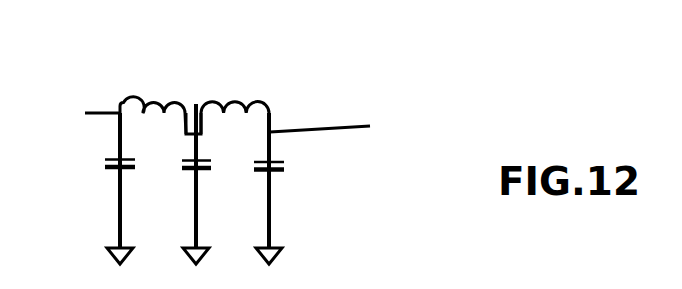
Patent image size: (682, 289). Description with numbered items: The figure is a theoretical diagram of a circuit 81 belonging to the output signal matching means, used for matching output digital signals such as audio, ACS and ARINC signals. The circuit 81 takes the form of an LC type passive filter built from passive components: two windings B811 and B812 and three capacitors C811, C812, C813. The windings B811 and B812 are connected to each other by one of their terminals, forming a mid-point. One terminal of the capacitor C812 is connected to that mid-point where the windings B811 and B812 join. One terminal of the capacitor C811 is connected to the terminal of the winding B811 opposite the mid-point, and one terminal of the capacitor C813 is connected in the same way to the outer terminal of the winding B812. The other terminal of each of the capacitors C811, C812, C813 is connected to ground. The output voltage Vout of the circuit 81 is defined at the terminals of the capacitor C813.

The circuit 81 is at (530, 47).
The winding B811 is at (142, 102).
The winding B812 is at (222, 102).
The capacitor C811 is at (103, 160).
The capacitor C812 is at (183, 172).
The capacitor C813 is at (285, 160).